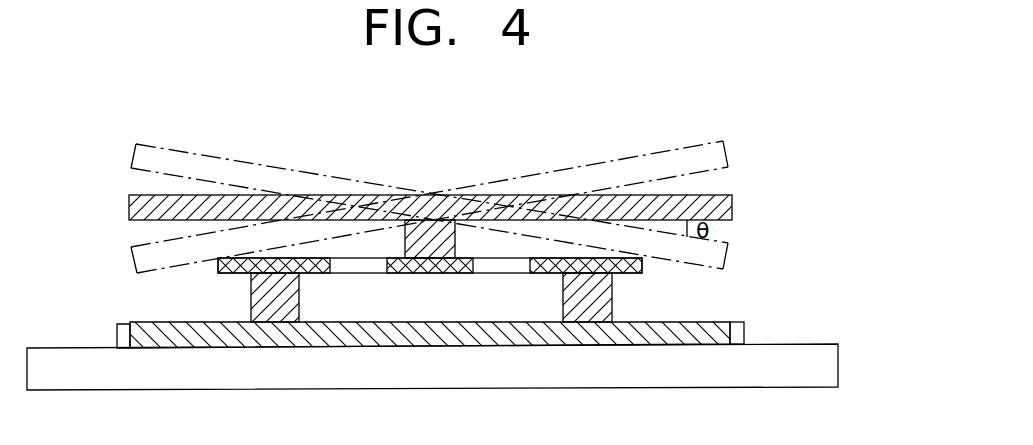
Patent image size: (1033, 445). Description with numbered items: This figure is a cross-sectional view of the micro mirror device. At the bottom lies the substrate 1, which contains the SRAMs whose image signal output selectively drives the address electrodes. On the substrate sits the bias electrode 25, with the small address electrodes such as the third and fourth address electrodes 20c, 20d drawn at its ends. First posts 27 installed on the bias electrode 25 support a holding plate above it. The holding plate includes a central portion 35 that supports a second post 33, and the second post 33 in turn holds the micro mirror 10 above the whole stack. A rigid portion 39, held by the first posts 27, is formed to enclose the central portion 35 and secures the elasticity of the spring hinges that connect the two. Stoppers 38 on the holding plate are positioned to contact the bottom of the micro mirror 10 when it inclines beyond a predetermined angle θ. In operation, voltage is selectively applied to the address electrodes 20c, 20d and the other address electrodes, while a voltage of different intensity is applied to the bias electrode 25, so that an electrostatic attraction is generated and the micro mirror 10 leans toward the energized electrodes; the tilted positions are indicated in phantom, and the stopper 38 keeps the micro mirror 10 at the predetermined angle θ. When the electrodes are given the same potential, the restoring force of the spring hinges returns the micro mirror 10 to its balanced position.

The substrate 1 is at (838, 365).
The micro mirror 10 is at (732, 207).
The third address electrode 20c is at (744, 333).
The fourth address electrode 20d is at (125, 340).
The bias electrode 25 is at (708, 323).
The first posts 27 is at (257, 295).
The second post 33 is at (405, 243).
The central portion 35 is at (429, 273).
The stoppers 38 is at (642, 266).
The rigid portion 39 is at (583, 258).